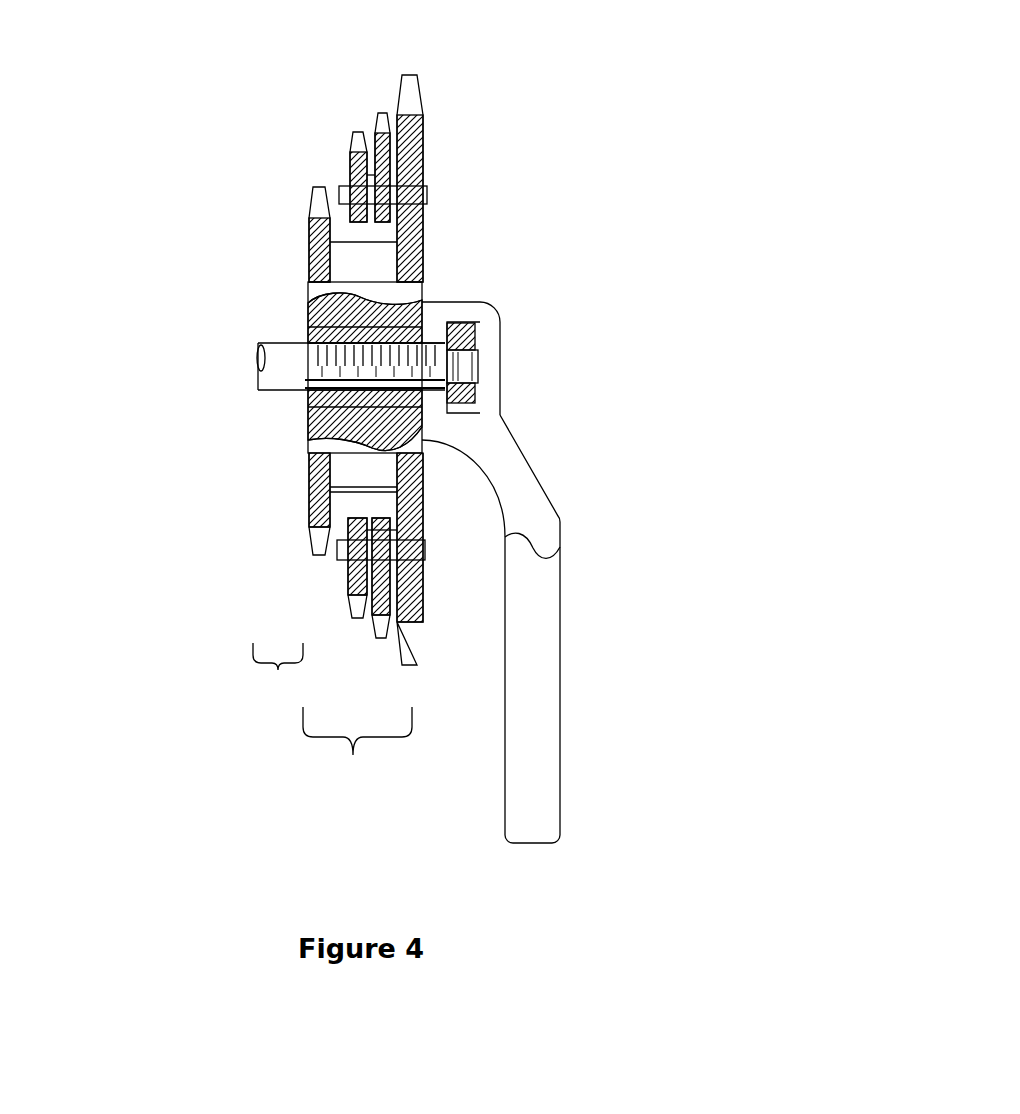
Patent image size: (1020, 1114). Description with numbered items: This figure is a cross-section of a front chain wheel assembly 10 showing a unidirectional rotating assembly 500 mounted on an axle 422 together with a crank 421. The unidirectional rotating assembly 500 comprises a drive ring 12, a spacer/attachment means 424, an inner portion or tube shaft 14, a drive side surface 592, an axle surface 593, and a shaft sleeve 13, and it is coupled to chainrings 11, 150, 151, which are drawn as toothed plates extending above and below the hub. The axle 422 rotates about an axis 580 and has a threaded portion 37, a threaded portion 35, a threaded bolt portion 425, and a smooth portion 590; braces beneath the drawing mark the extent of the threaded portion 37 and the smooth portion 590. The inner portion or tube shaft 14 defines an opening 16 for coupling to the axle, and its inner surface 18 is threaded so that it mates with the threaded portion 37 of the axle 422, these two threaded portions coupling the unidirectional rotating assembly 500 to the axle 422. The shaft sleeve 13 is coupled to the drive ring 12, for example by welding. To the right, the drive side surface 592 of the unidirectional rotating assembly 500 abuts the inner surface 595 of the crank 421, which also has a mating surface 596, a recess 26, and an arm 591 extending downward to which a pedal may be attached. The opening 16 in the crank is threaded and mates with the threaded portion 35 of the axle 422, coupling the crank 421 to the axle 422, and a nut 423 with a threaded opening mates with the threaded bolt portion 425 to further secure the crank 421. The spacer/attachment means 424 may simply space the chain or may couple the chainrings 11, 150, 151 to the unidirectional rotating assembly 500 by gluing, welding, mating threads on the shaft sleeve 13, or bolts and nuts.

The sprocket assembly 10 is at (208, 155).
The chainring 11 is at (423, 138).
The drive ring 12 is at (308, 237).
The shaft sleeve 13 is at (308, 318).
The inner portion or tube shaft 14 is at (308, 334).
The opening 16 is at (423, 321).
The inner surface 18 is at (260, 362).
The recess 26 is at (477, 322).
The threaded portion 35 is at (453, 247).
The threaded portion 37 is at (357, 746).
The chainring 150 is at (357, 133).
The chainring 151 is at (382, 113).
The crank 421 is at (545, 510).
The axle 422 is at (258, 395).
The nut 423 is at (477, 337).
The spacer/attachment means 424 is at (362, 490).
The threaded bolt portion 425 is at (478, 375).
The unidirectional rotating assembly 500 is at (294, 536).
The axis 580 is at (308, 346).
The smooth portion 590 is at (278, 671).
The arm 591 is at (540, 755).
The drive side surface 592 is at (380, 352).
The axle surface 593 is at (308, 310).
The inner surface 595 is at (422, 423).
The mating surface 596 is at (477, 302).